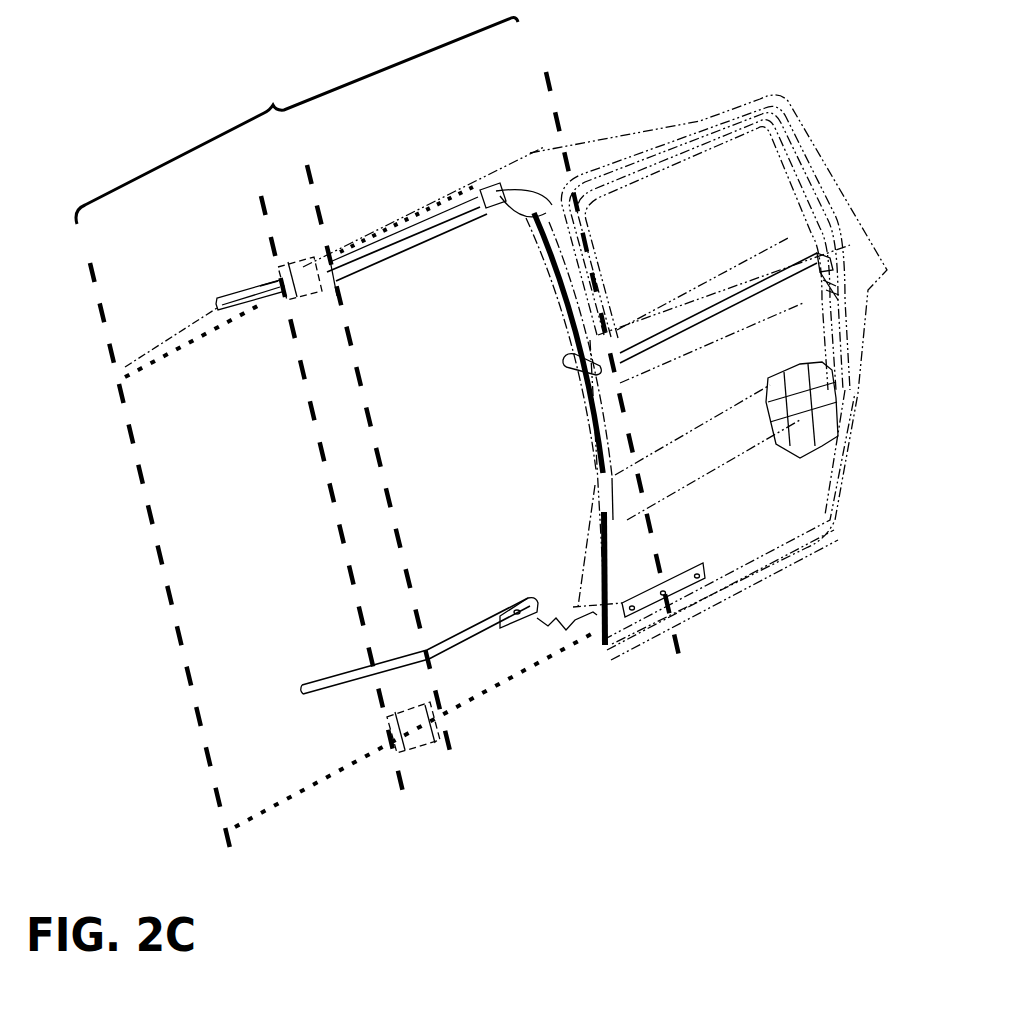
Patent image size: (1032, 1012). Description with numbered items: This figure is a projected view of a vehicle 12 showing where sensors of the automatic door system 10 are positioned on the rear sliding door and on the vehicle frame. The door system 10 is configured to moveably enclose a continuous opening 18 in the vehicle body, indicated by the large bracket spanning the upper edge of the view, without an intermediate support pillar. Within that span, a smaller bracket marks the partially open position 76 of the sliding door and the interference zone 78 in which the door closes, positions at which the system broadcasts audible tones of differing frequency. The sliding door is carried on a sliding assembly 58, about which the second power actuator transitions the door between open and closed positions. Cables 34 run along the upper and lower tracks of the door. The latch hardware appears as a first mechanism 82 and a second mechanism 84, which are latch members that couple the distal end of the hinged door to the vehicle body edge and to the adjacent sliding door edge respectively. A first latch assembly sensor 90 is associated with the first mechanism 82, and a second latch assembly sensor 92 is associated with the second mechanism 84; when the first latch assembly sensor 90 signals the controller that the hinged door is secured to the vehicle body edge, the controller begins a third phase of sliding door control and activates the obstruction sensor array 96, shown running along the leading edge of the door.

The automatic door system 10 is at (78, 169).
The vehicle 12 is at (621, 147).
The continuous opening 18 is at (297, 121).
The cable 34 is at (178, 345).
The sliding assembly 58 is at (815, 407).
The partially open position 76 is at (308, 158).
The interference zone 78 is at (390, 460).
The first mechanism 82 is at (293, 318).
The second mechanism 84 is at (622, 497).
The first latch assembly sensor 90 is at (330, 296).
The second latch assembly sensor 92 is at (603, 493).
The obstruction sensor array 96 is at (557, 280).